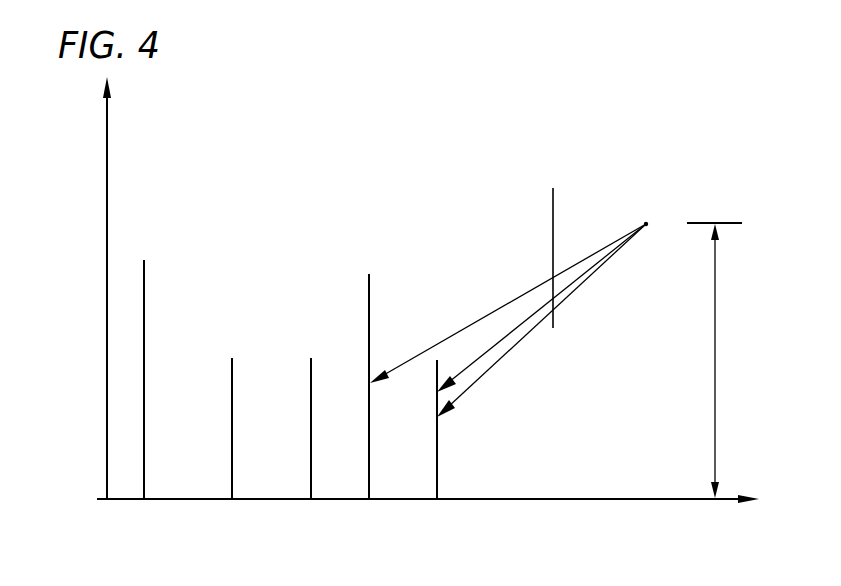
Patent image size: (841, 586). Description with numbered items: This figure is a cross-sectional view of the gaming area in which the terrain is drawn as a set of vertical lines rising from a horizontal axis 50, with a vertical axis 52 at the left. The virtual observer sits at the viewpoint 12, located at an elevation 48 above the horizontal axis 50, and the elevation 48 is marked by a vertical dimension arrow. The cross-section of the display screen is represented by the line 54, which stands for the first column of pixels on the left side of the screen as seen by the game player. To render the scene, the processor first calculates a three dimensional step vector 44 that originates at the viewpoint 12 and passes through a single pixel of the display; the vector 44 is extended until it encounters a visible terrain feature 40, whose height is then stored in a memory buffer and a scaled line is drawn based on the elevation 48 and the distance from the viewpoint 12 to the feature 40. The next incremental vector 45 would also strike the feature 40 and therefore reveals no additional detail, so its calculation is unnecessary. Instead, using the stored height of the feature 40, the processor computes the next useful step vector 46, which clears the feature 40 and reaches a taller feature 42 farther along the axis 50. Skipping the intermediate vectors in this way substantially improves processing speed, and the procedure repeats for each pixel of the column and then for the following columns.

The viewpoint 12 is at (646, 224).
The feature 40 is at (437, 477).
The second target surface line 42 is at (369, 300).
The step vector 44 is at (510, 350).
The vector 45 is at (510, 333).
The vector 46 is at (443, 341).
The elevation 48 is at (715, 432).
The Y axis 50 is at (597, 512).
The Z axis 52 is at (101, 379).
The line 54 is at (553, 203).